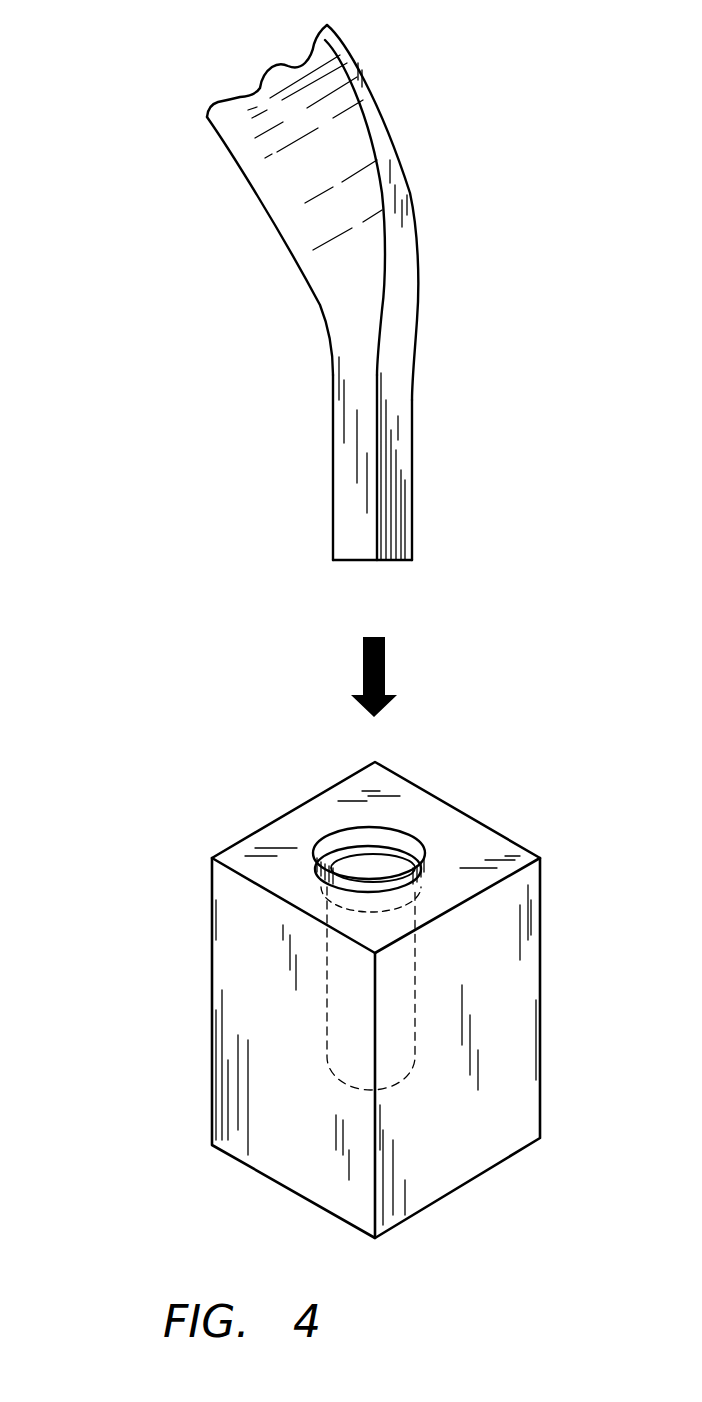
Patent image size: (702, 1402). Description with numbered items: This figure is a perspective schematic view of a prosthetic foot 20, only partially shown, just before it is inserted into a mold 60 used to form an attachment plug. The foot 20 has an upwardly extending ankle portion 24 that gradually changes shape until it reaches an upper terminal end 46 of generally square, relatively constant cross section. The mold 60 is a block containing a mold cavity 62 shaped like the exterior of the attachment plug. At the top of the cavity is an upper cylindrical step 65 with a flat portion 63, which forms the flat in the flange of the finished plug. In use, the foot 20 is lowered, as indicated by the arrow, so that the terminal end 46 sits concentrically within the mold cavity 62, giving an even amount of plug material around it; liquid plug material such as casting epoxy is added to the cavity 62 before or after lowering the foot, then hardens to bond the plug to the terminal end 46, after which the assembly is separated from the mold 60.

The prosthetic foot 20 is at (369, 324).
The ankle portion 24 is at (412, 450).
The terminal end 46 is at (388, 560).
The mold 60 is at (296, 985).
The mold cavity 62 is at (385, 865).
The flat portion 63 is at (351, 852).
The upper cylindrical step 65 is at (420, 850).